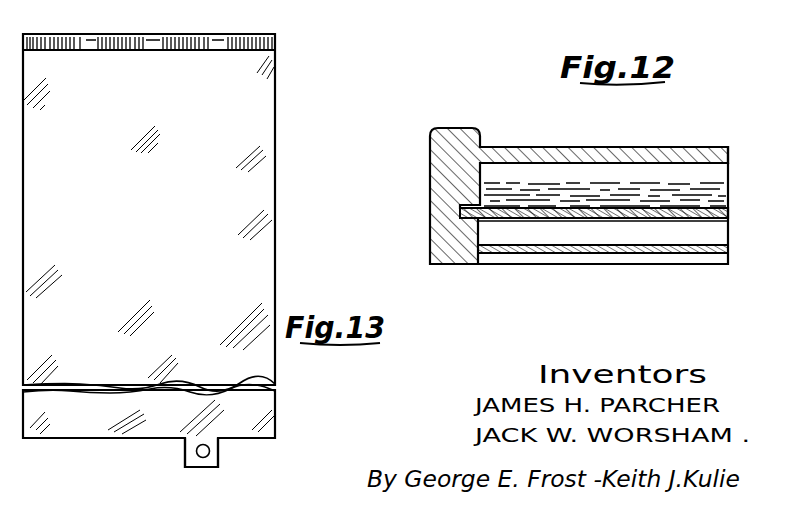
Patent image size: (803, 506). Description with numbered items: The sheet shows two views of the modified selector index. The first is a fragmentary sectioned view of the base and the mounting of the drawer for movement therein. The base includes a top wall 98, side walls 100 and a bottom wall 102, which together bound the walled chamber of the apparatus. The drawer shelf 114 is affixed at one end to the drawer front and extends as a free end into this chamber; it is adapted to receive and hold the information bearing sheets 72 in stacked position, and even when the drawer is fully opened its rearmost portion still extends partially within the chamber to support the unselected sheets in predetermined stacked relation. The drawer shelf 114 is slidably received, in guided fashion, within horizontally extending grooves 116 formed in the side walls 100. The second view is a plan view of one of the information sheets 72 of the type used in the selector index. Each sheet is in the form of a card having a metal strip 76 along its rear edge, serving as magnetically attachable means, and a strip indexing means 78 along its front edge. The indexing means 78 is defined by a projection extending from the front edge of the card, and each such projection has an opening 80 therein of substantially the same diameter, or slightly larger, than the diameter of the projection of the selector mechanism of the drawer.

In FIG. 13, the information bearing sheet 72 is at (168, 240).
In FIG. 12, the information bearing sheet 72 is at (648, 206).
In FIG. 13, the metal strip 76 is at (90, 31).
In FIG. 13, the strip indexing means 78 is at (184, 455).
In FIG. 13, the opening 80 is at (210, 451).
In FIG. 12, the top wall 98 is at (525, 152).
In FIG. 12, the side wall 100 is at (444, 191).
In FIG. 12, the bottom wall 102 is at (530, 254).
In FIG. 12, the drawer shelf 114 is at (593, 218).
In FIG. 12, the groove 116 is at (450, 268).